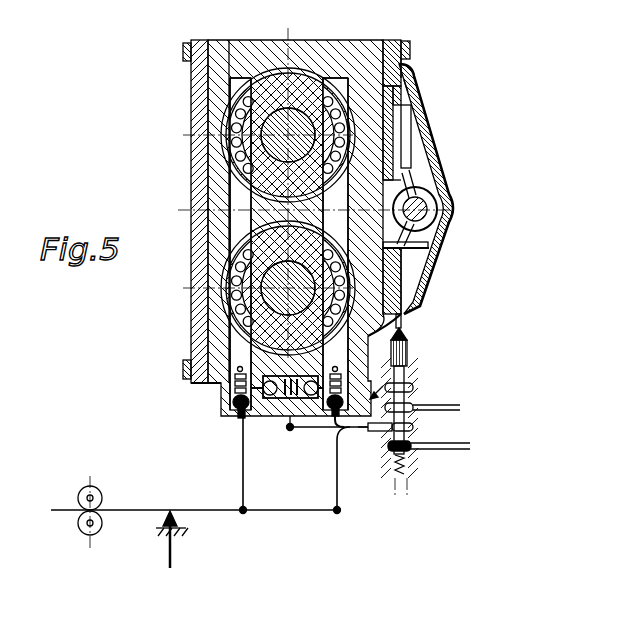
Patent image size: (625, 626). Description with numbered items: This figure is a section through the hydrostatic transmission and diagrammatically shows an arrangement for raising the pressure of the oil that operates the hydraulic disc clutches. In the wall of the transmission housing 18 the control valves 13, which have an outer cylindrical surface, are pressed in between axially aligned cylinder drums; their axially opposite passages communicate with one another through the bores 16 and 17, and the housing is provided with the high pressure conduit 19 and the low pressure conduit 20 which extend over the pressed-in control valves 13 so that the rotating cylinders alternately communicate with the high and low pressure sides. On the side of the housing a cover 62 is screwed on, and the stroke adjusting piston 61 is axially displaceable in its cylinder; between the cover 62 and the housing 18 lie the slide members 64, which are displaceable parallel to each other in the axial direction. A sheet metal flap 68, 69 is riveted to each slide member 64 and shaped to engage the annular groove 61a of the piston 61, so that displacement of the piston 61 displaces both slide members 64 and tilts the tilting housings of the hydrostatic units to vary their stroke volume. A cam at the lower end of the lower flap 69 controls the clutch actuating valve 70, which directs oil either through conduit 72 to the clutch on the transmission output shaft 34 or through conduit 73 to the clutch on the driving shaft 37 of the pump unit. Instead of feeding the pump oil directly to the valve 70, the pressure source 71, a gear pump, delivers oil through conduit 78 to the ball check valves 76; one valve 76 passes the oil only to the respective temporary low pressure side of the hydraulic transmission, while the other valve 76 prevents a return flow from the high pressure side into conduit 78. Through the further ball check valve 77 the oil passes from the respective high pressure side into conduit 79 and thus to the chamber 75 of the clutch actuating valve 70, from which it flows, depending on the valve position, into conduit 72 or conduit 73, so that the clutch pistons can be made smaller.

The control valve 13 is at (362, 170).
The bore 16 is at (243, 64).
The bore 17 is at (354, 32).
The transmission housing 18 is at (293, 40).
The high pressure conduit 19 is at (352, 178).
The low pressure conduit 20 is at (208, 193).
The transmission output shaft 34 is at (295, 111).
The driving shaft for the pump unit 37 is at (258, 266).
The stroke adjusting piston 61 is at (428, 186).
The annular groove 61a is at (430, 246).
The cover 62 is at (436, 148).
The slide member 64 is at (387, 84).
The sheet metal flap 68 is at (398, 96).
The sheet metal flap 69 is at (395, 268).
The clutch actuating valve 70 is at (404, 358).
The pressure source 71 is at (87, 525).
The conduit 72 is at (438, 397).
The conduit 73 is at (432, 443).
The chamber 75 is at (405, 419).
The ball check valve 76 is at (223, 411).
The ball check valve 77 is at (298, 402).
The conduit 78 is at (210, 504).
The conduit 79 is at (313, 422).